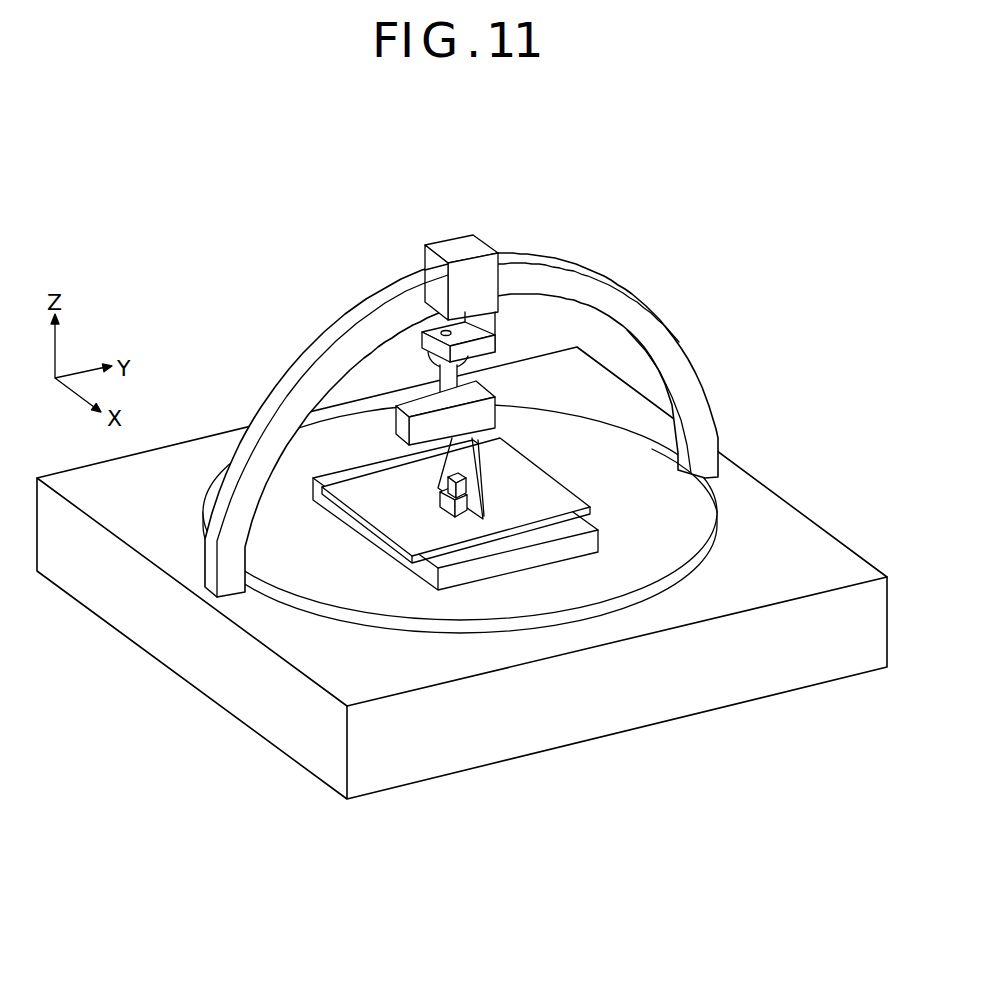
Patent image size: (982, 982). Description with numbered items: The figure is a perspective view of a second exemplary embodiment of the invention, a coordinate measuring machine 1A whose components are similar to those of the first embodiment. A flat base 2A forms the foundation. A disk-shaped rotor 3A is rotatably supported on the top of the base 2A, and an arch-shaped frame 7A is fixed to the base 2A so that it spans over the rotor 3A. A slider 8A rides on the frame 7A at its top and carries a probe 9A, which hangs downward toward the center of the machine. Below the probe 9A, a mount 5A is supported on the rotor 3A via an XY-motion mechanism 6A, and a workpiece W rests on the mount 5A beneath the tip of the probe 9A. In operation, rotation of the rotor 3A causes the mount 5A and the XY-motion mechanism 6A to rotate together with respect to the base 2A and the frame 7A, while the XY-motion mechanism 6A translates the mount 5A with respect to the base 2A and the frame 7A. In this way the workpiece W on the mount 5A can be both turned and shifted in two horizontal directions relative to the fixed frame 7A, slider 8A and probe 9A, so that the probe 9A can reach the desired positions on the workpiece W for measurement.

The coordinate measuring machine 1A is at (264, 182).
The base 2A is at (152, 608).
The rotor 3A is at (700, 564).
The mount 5A is at (560, 502).
The XY-motion mechanism 6A is at (520, 548).
The frame 7A is at (613, 300).
The slider 8A is at (465, 248).
The probe 9A is at (495, 396).
The workpiece W is at (483, 476).